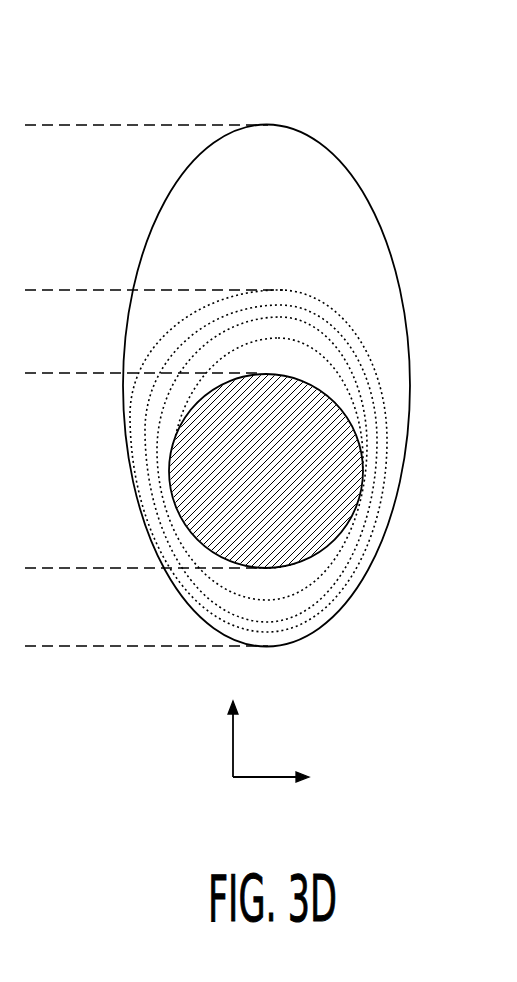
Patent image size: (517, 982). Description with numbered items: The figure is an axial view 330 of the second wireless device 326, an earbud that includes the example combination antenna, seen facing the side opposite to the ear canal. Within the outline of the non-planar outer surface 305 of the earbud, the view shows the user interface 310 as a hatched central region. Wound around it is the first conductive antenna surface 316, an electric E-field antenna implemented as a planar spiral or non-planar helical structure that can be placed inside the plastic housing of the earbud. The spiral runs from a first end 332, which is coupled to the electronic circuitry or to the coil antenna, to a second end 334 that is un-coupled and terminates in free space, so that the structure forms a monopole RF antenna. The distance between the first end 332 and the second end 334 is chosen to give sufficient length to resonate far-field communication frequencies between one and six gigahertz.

The second wireless device 326 is at (167, 77).
The non-planar outer surface 305 is at (368, 200).
The user interface 310 is at (313, 482).
The first conductive antenna surface 316 is at (374, 352).
The first end 332 is at (306, 454).
The second end 334 is at (263, 577).
The axial view 330 is at (235, 739).